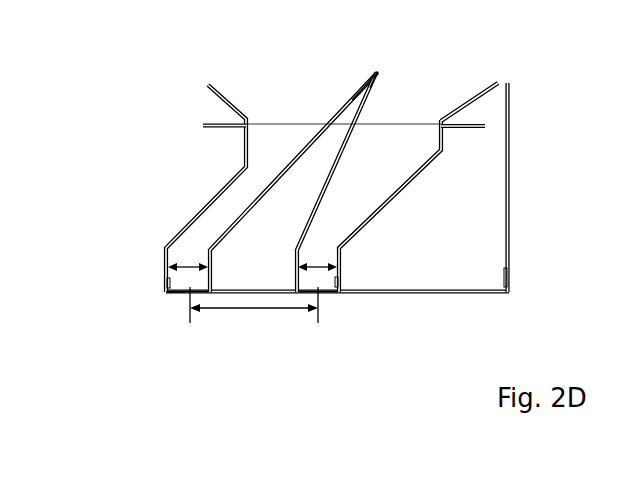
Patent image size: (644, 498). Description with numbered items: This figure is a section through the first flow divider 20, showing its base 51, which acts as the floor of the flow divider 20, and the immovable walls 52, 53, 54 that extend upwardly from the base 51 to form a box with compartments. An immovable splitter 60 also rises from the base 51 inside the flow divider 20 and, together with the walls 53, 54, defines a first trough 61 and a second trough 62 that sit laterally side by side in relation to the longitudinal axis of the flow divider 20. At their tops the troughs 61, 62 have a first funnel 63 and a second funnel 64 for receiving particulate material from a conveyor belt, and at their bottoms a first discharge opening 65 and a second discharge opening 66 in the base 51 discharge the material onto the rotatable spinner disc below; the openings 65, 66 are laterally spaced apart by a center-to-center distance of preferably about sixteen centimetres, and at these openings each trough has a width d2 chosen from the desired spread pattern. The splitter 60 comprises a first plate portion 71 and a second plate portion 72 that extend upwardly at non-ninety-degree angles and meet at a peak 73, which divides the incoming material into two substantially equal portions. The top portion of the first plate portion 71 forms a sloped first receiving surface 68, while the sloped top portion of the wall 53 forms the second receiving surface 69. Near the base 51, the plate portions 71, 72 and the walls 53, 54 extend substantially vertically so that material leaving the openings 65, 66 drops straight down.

The first flow divider 20 is at (373, 211).
The base 51 is at (399, 293).
The immovable wall 52 is at (511, 182).
The immovable wall 53 is at (405, 186).
The immovable wall 54 is at (202, 212).
The immovable splitter 60 is at (378, 72).
The first trough 61 is at (238, 221).
The second trough 62 is at (375, 191).
The first funnel 63 is at (292, 90).
The second funnel 64 is at (435, 67).
The first discharge opening 65 is at (181, 293).
The second discharge opening 66 is at (262, 340).
The first particulate material receiving surface 68 is at (347, 103).
The second particulate material receiving surface 69 is at (464, 104).
The first plate portion 71 is at (280, 173).
The second plate portion 72 is at (348, 143).
The peak 73 is at (374, 80).
The width d2 is at (252, 270).